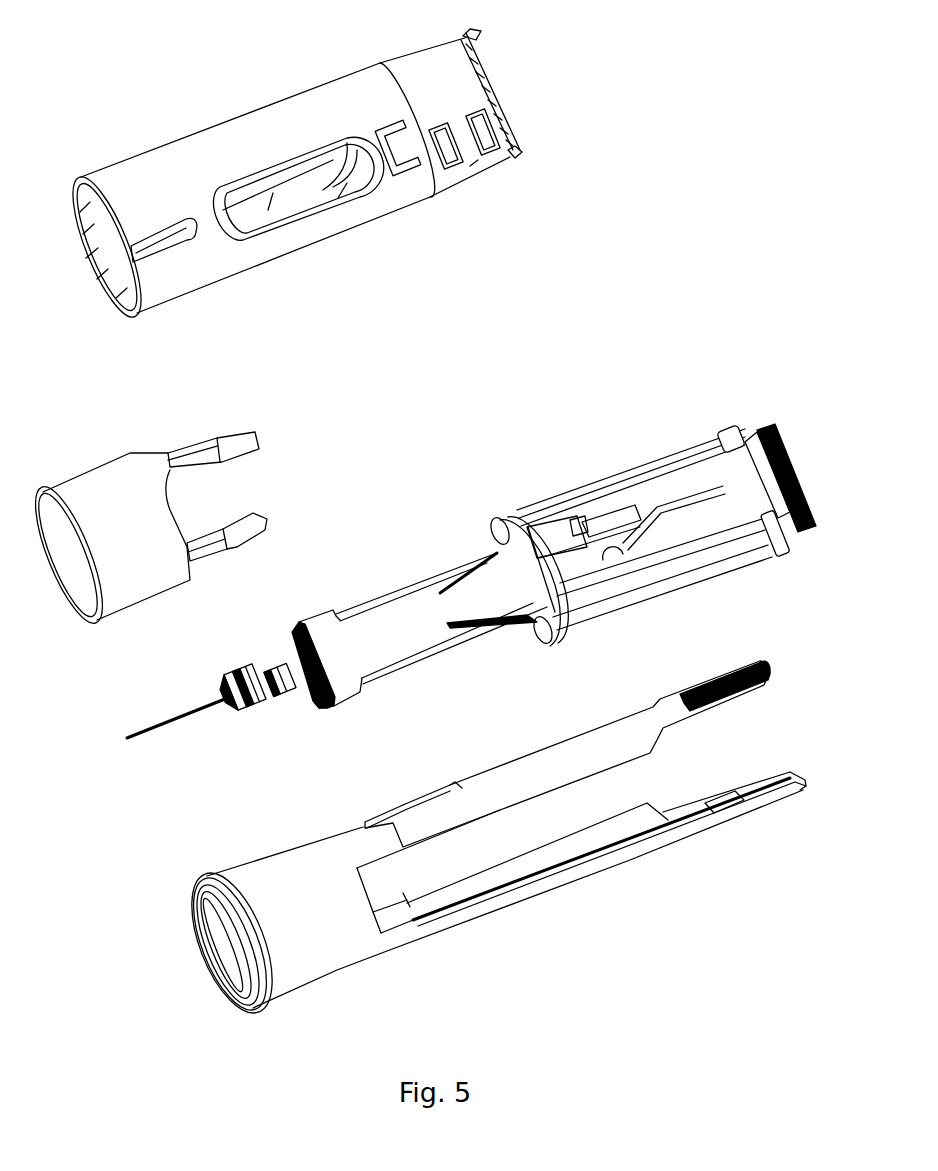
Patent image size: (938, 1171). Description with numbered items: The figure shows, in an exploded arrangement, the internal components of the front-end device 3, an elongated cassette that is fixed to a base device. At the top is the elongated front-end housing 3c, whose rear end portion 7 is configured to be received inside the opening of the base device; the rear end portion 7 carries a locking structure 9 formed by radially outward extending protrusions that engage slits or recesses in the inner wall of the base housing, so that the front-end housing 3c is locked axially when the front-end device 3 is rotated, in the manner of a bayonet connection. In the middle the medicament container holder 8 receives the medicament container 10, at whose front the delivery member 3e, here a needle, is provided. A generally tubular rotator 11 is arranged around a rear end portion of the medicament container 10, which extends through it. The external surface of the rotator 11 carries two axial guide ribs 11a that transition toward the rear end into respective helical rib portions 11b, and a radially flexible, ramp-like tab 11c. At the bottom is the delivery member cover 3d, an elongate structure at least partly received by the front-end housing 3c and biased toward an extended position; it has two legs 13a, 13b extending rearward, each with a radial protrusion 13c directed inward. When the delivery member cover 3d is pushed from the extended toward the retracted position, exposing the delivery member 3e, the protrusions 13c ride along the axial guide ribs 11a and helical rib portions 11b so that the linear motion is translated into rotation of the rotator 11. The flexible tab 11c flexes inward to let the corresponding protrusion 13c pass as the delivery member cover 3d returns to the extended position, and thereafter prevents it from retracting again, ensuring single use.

The front-end device 3 is at (43, 123).
The front-end housing 3c is at (230, 118).
The delivery member cover 3d is at (333, 970).
The delivery member 3e is at (130, 733).
The rear end portion 7 is at (510, 122).
The medicament container holder 8 is at (353, 702).
The locking structure 9 is at (472, 166).
The medicament container 10 is at (407, 583).
The rotator 11 is at (703, 553).
The axial guide ribs 11a is at (625, 557).
The helical rib portions 11b is at (650, 505).
The flexible tab 11c is at (582, 512).
The leg 13a is at (765, 810).
The leg 13b is at (772, 668).
The radial protrusion 13c is at (738, 800).